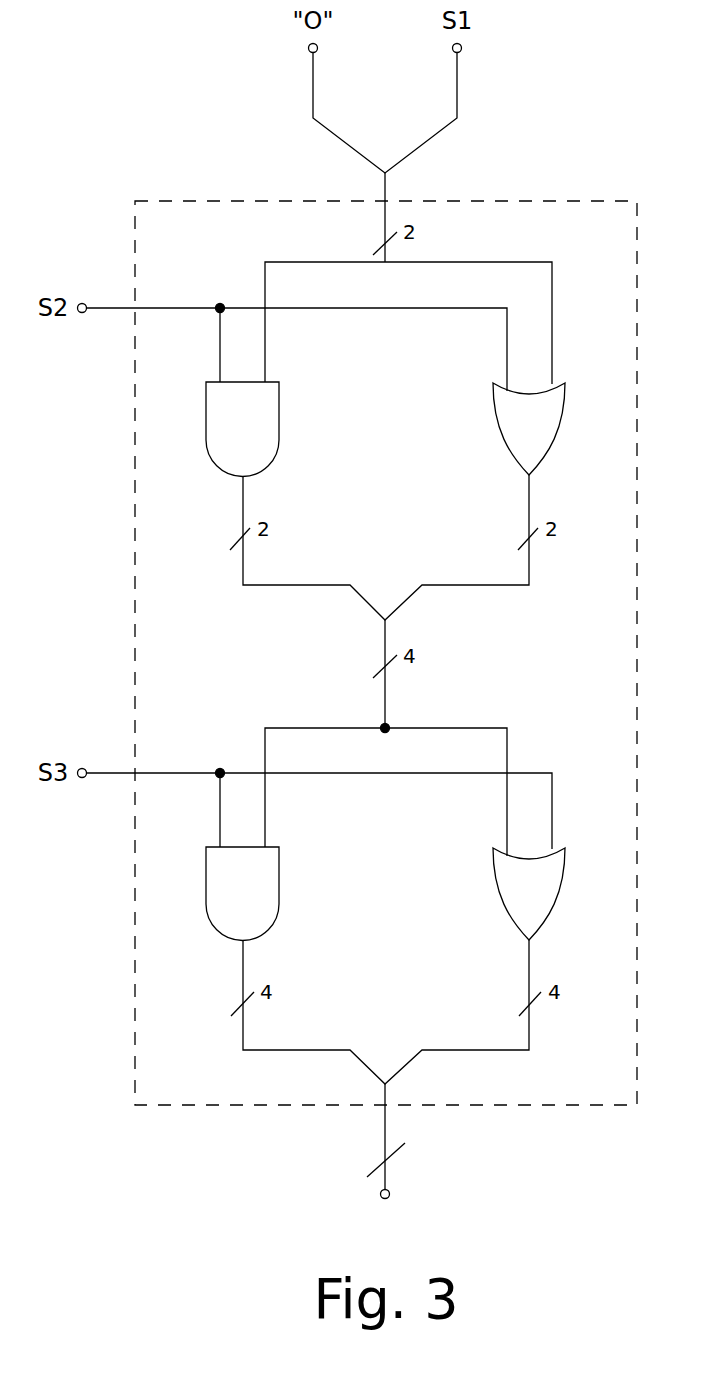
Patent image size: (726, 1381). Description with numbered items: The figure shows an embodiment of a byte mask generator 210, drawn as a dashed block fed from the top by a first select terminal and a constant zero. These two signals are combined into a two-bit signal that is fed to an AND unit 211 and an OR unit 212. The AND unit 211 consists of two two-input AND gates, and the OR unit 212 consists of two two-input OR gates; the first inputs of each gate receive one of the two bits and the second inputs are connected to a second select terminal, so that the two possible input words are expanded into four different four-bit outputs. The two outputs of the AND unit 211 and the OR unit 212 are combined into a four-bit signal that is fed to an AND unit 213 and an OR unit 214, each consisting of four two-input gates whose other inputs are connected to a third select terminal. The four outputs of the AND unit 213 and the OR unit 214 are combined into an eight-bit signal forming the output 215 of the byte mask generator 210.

The byte mask generator 210 is at (252, 218).
The AND unit 211 is at (233, 447).
The OR unit 212 is at (530, 447).
The AND unit 213 is at (233, 912).
The OR unit 214 is at (530, 912).
The output 215 is at (394, 1163).